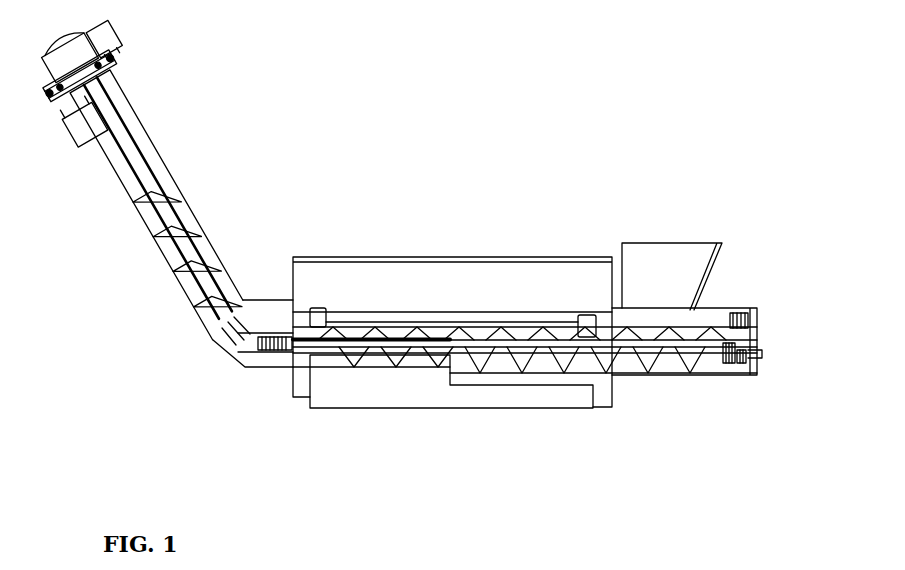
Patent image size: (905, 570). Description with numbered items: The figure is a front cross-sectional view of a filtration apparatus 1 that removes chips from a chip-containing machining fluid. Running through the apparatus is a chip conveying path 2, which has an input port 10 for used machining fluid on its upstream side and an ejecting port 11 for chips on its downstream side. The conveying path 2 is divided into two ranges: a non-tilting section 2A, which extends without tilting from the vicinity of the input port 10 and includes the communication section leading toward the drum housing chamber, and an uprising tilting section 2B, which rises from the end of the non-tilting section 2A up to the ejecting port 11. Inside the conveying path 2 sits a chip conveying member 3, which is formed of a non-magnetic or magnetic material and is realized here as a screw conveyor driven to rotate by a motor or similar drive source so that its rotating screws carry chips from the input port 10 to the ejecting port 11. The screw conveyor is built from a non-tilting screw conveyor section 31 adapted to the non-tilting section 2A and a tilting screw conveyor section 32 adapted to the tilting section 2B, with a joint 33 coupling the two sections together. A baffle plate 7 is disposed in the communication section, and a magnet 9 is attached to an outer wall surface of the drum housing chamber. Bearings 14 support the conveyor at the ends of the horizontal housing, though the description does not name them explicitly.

The filtration apparatus 1 is at (766, 163).
The chip conveying path 2 is at (397, 206).
The non-tilting section 2A is at (397, 330).
The tilting section 2B is at (208, 258).
The chip conveying member 3 is at (500, 330).
The baffle plate 7 is at (362, 333).
The magnet 9 is at (393, 409).
The input port 10 is at (654, 243).
The ejecting port 11 is at (68, 134).
The bearing 14 is at (311, 311).
The non-tilting screw conveyor section 31 is at (652, 372).
The tilting screw conveyor section 32 is at (178, 273).
The joint 33 is at (236, 360).